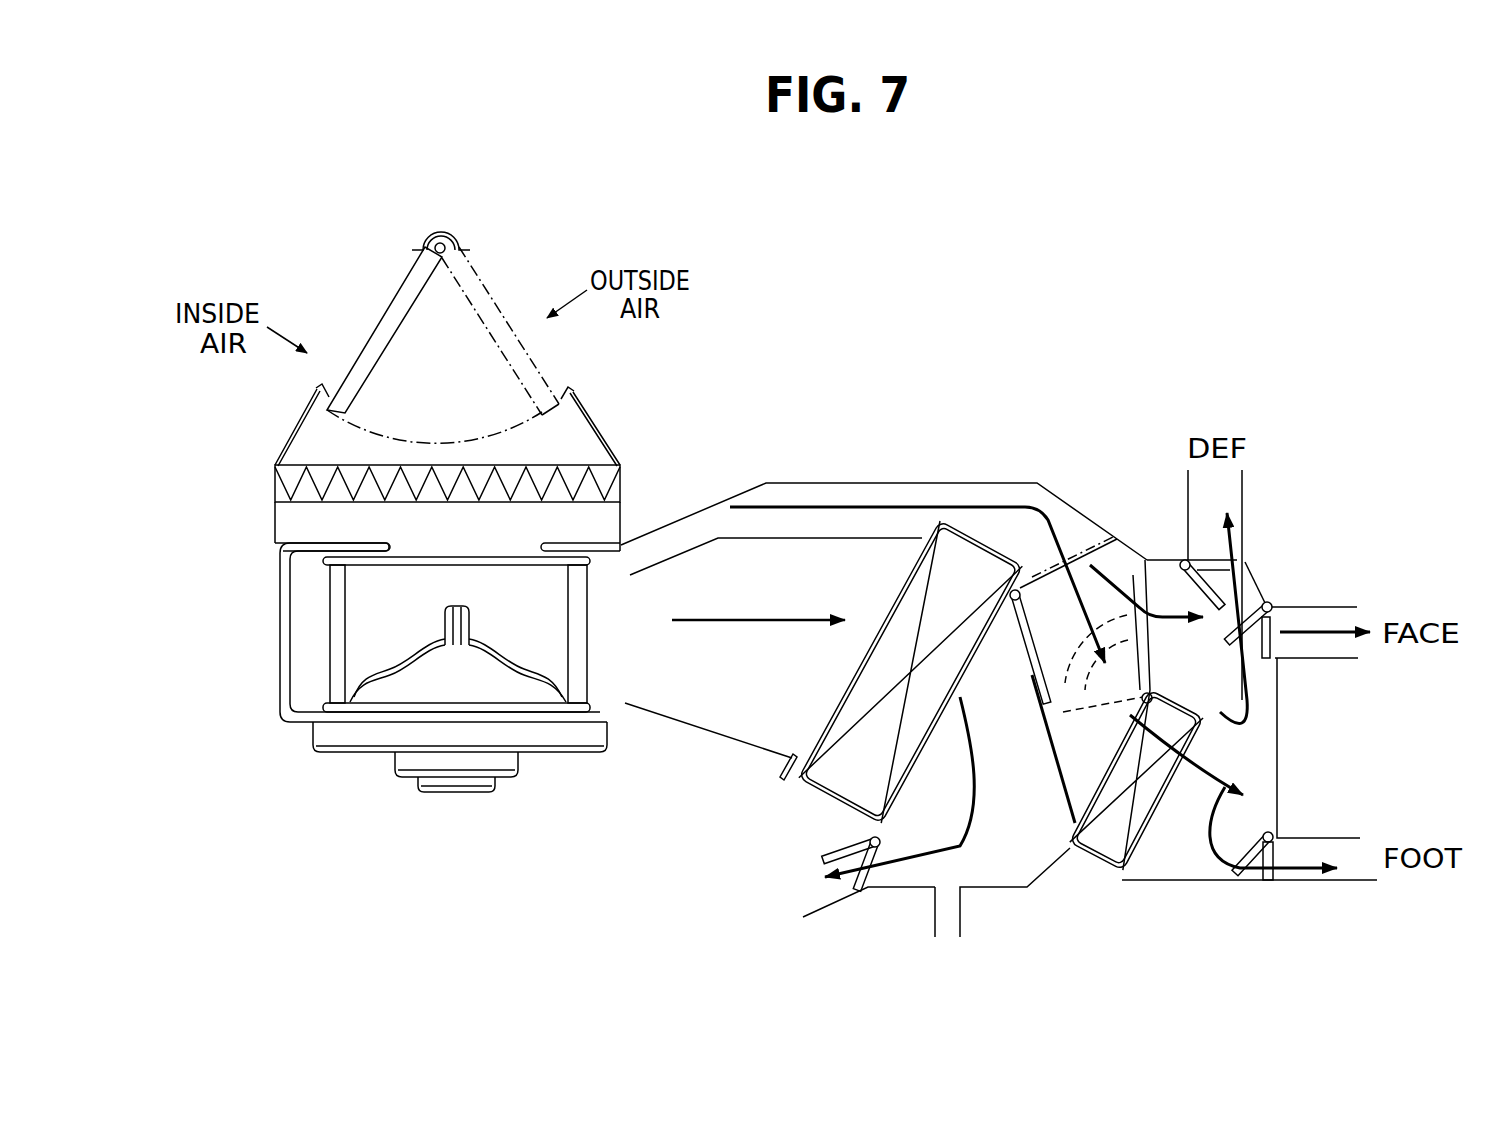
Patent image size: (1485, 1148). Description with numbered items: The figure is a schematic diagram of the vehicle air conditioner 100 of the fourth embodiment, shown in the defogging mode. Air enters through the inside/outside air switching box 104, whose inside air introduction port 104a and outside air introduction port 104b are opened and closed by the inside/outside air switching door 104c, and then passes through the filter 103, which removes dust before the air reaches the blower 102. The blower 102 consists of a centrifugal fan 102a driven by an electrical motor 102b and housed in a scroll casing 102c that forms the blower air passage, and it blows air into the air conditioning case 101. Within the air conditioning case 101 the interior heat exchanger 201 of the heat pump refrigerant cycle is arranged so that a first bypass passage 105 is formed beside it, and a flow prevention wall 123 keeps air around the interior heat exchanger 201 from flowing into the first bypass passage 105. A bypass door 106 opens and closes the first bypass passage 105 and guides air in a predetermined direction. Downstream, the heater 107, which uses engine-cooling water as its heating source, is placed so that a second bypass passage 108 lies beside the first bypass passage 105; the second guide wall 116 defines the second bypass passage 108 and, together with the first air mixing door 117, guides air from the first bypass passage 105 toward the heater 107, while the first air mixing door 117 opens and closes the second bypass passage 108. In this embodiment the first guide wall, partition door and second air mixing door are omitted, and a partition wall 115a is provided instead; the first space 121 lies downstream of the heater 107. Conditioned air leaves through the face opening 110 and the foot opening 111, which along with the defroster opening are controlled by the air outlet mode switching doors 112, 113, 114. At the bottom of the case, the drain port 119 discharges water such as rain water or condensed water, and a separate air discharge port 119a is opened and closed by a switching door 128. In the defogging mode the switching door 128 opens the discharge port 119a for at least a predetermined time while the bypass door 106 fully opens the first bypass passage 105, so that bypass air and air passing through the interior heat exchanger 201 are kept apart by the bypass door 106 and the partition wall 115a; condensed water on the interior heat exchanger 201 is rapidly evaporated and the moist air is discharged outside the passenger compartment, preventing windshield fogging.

The vehicle air conditioner 100 is at (873, 400).
The air conditioning case 101 is at (733, 487).
The blower 102 is at (345, 738).
The centrifugal fan 102a is at (580, 653).
The electrical motor 102b is at (518, 763).
The scroll casing 102c is at (282, 680).
The filter 103 is at (622, 467).
The inside/outside air switching box 104 is at (600, 430).
The inside air introduction port 104a is at (337, 308).
The outside air introduction port 104b is at (488, 255).
The inside/outside air switching door 104c is at (405, 255).
The first bypass passage 105 is at (977, 530).
The bypass door 106 is at (1062, 560).
The heater 107 is at (1125, 885).
The second bypass passage 108 is at (1177, 633).
The face opening 110 is at (1317, 620).
The foot opening 111 is at (1330, 870).
The air outlet mode switching door 112 is at (1245, 560).
The air outlet mode switching door 113 is at (1275, 648).
The air outlet mode switching door 114 is at (1260, 883).
The partition wall 115a is at (1070, 787).
The second guide wall 116 is at (1123, 552).
The first air mixing door 117 is at (1120, 575).
The drain port 119 is at (962, 923).
The air discharge port 119a is at (838, 893).
The first space 121 is at (1257, 728).
The flow prevention wall 123 is at (785, 537).
The switching door 128 is at (820, 865).
The interior heat exchanger 201 is at (817, 793).